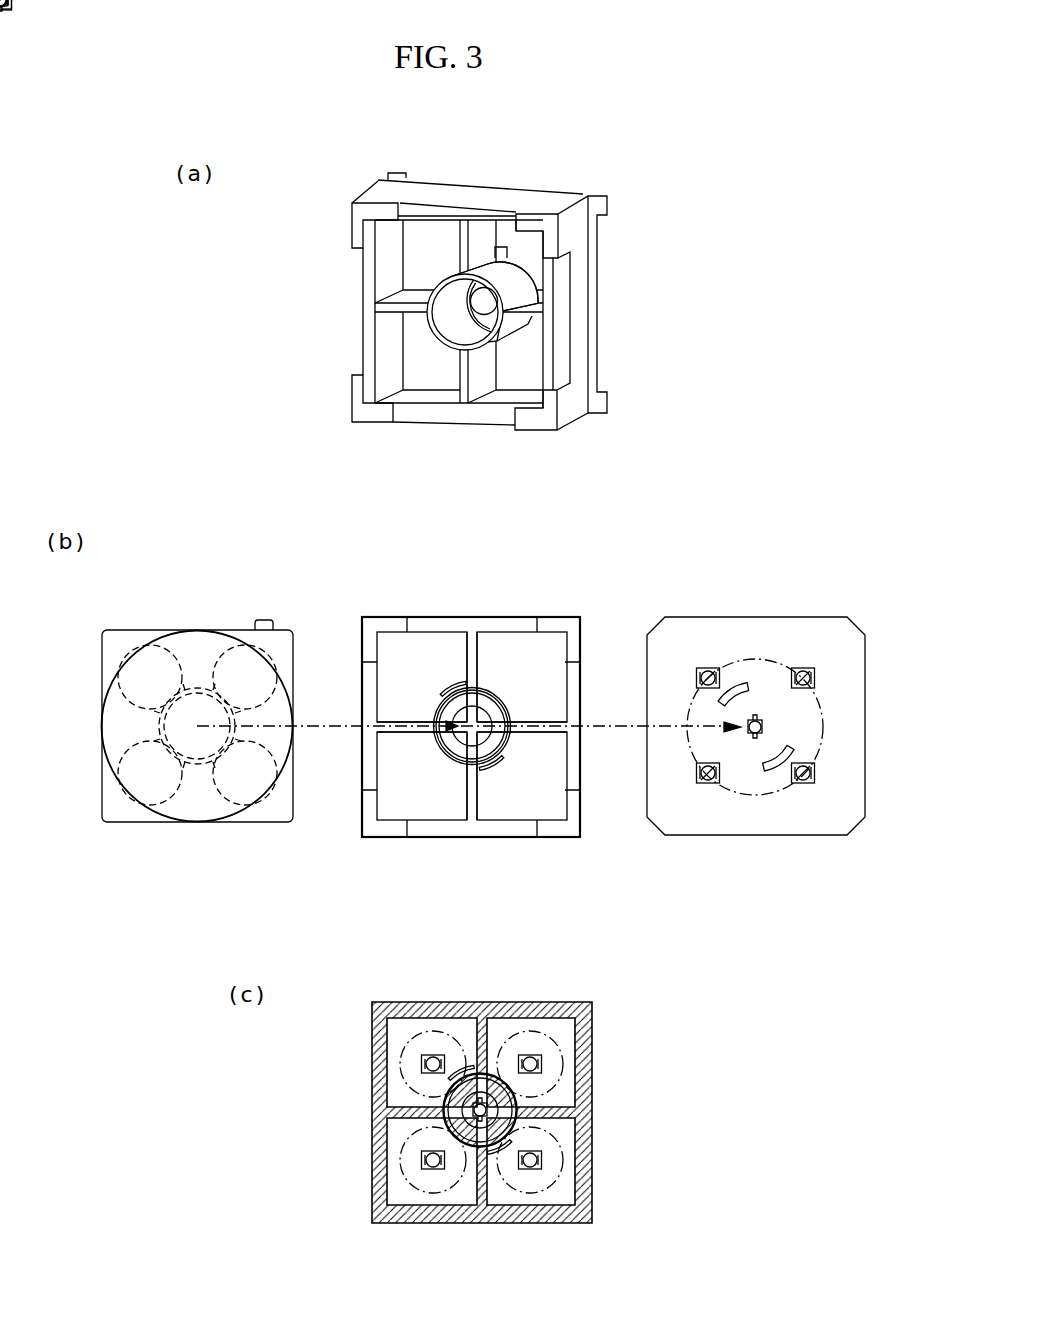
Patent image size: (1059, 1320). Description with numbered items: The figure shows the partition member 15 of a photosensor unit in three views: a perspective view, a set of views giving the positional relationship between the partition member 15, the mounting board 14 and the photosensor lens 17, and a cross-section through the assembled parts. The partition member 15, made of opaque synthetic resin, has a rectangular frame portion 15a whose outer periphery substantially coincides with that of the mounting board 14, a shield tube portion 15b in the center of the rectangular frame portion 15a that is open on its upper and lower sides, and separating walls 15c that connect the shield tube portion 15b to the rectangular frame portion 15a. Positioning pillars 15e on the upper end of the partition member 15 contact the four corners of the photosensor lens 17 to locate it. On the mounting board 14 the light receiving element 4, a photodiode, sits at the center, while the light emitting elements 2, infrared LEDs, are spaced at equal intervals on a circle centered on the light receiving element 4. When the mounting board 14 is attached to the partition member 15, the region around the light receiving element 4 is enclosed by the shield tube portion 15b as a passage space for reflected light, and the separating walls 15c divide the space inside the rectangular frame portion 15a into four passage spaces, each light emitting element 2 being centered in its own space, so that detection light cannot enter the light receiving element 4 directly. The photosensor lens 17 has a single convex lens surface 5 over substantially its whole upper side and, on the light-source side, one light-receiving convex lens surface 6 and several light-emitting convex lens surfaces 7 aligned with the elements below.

The partition member 15 is at (490, 680).
The rectangular frame portion 15a is at (387, 334).
The shield tube portion 15b is at (513, 282).
The separating walls 15c is at (478, 233).
The positioning pillars 15e is at (357, 214).
The photosensor lens 17 is at (323, 906).
The convex lens surface 5 is at (202, 637).
The light-emitting convex lens surfaces 7 is at (140, 660).
The light-receiving convex lens surface 6 is at (197, 748).
The mounting board 14 is at (447, 632).
The light emitting elements 2 is at (705, 680).
The light receiving element 4 is at (762, 727).